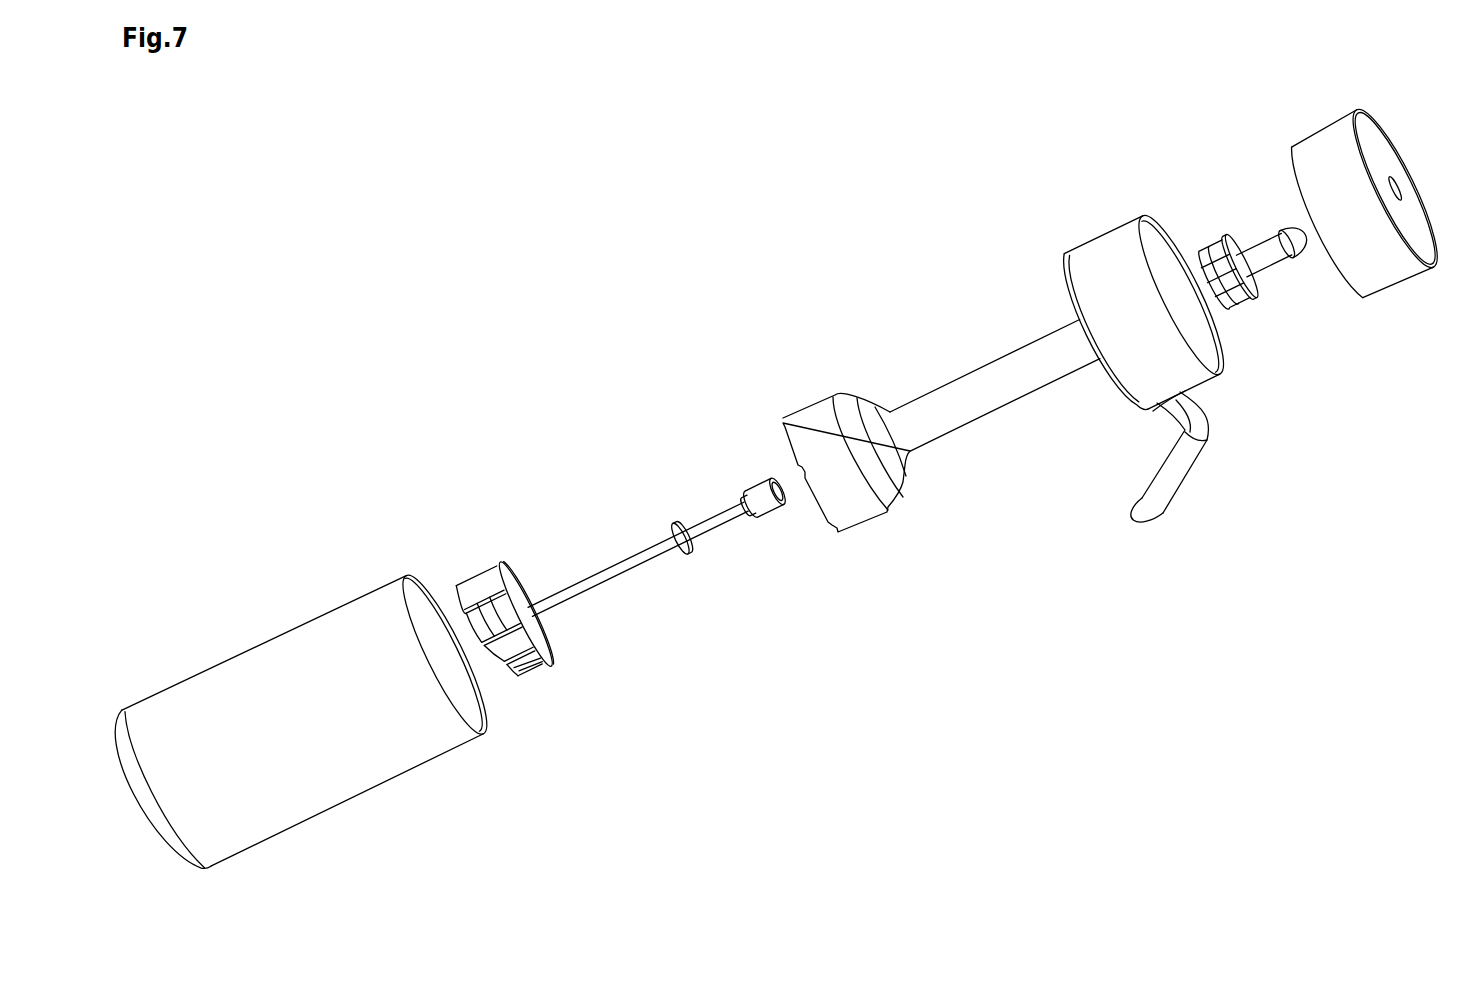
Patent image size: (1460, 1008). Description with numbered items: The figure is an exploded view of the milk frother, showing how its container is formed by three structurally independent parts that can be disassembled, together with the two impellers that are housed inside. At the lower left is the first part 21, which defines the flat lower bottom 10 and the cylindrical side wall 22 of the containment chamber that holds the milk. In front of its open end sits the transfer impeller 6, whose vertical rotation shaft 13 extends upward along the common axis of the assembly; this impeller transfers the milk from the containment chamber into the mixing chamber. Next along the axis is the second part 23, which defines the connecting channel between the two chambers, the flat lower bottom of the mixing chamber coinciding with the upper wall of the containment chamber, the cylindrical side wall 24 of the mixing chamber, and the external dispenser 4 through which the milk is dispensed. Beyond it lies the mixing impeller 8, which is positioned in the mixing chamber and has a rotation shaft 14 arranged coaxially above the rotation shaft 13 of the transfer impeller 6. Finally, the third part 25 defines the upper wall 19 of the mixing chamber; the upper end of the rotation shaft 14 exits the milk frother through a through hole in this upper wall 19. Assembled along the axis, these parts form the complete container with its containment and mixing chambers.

The external dispenser 4 is at (1165, 493).
The transfer impeller 6 is at (546, 689).
The mixing impeller 8 is at (1249, 327).
The flat lower bottom 10 is at (140, 817).
The rotation shaft 13 is at (630, 572).
The rotation shaft 14 is at (1272, 258).
The upper wall 19 is at (1385, 138).
The first part 21 is at (290, 738).
The cylindrical side wall 22 is at (314, 796).
The second part 23 is at (972, 329).
The cylindrical side wall 24 is at (1103, 245).
The third part 25 is at (1316, 182).